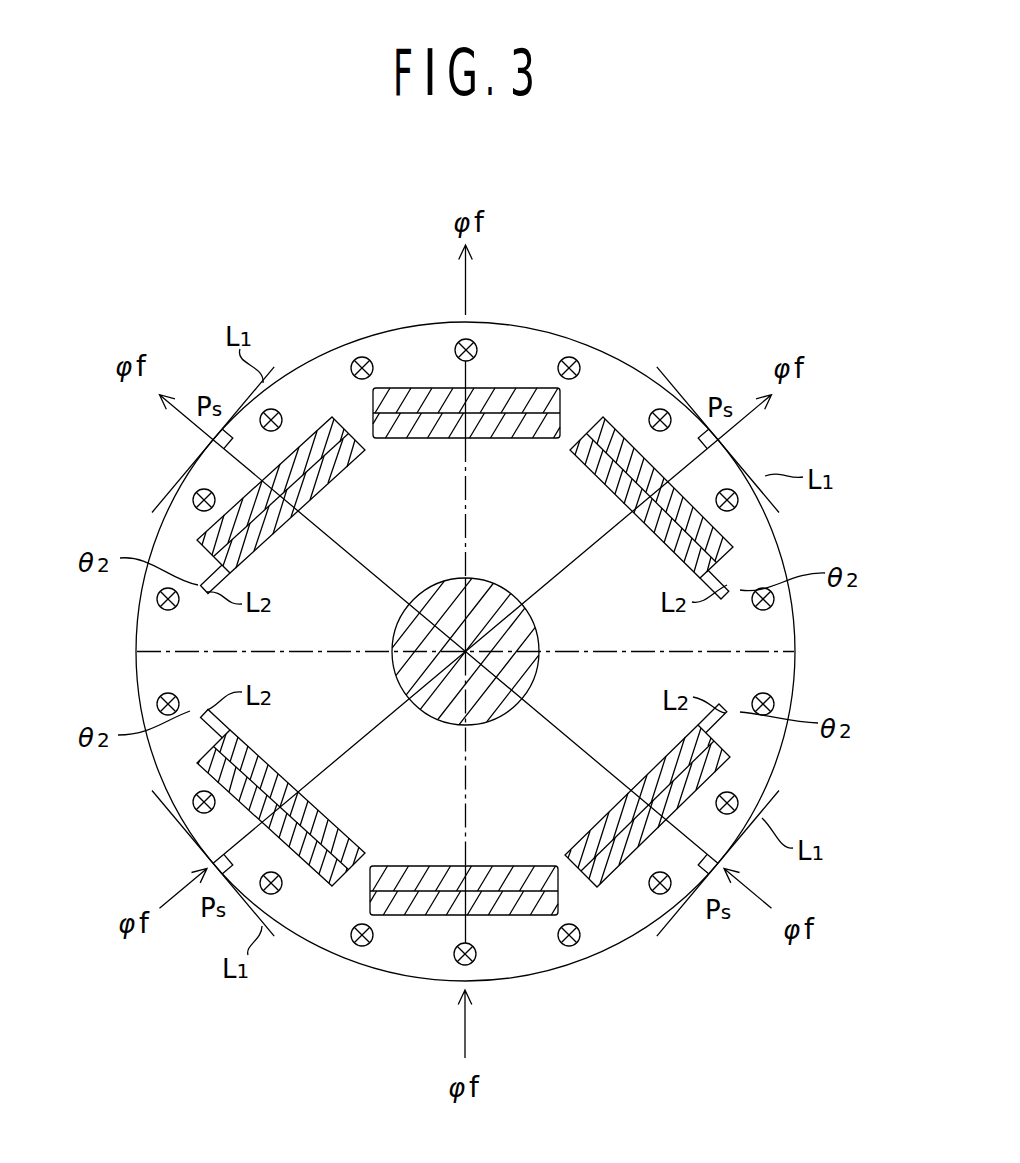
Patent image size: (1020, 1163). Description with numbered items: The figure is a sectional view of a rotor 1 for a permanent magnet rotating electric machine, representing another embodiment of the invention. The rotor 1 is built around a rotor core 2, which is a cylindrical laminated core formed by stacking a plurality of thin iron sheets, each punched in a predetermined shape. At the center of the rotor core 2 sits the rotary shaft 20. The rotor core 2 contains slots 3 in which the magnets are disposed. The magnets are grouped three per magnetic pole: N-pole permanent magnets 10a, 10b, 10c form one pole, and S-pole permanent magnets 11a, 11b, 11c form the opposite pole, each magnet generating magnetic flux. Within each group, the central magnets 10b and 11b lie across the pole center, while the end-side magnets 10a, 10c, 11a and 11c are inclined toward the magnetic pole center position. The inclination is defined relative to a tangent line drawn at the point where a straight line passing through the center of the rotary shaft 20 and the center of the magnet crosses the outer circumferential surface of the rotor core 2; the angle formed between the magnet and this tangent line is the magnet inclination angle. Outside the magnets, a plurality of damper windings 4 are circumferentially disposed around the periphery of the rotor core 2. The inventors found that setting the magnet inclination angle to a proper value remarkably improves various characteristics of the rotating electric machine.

The rotor 1 is at (143, 630).
The rotor core 2 is at (153, 672).
The slots 3 is at (527, 388).
The damper windings 4 is at (572, 358).
The N-pole permanent magnet 10a is at (203, 547).
The N-pole permanent magnet 10b is at (415, 395).
The N-pole permanent magnet 10c is at (635, 447).
The S-pole permanent magnet 11a is at (313, 878).
The S-pole permanent magnet 11b is at (515, 908).
The S-pole permanent magnet 11c is at (712, 775).
The rotary shaft 20 is at (538, 644).